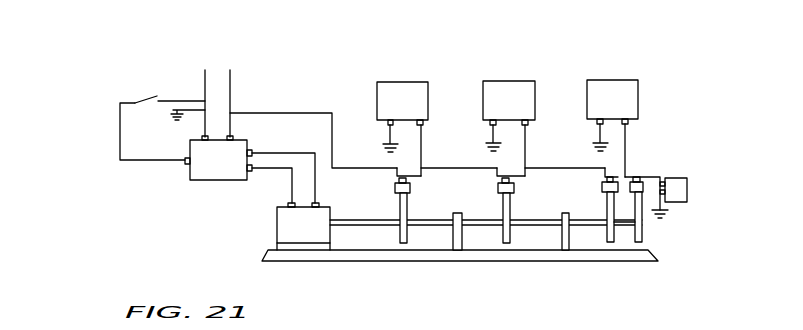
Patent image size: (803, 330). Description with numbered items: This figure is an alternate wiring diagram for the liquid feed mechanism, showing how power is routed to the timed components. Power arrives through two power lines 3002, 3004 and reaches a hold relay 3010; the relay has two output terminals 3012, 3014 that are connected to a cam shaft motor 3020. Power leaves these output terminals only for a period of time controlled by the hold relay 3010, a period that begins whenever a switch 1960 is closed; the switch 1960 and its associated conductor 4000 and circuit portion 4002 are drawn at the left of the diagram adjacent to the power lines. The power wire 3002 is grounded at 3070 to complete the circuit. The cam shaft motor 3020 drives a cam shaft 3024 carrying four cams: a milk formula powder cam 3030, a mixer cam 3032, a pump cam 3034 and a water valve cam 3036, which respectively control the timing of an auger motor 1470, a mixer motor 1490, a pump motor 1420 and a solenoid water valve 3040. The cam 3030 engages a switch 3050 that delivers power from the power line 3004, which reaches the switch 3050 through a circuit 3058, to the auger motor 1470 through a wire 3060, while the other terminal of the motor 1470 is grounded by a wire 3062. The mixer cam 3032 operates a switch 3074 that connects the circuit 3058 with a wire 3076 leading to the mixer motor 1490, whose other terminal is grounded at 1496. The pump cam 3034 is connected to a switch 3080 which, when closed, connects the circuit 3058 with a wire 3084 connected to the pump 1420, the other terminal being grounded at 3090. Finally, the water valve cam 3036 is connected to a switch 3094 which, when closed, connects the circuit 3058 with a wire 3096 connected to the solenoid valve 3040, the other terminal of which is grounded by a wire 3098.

The conductor 4000 is at (177, 102).
The switch 1960 is at (157, 96).
The circuit 4002 is at (120, 124).
The power line 3002 is at (203, 76).
The power line 3004 is at (232, 80).
The ground 3070 is at (195, 115).
The circuit 3058 is at (318, 112).
The hold relay 3010 is at (196, 181).
The output terminal 3012 is at (252, 152).
The output terminal 3014 is at (250, 181).
The cam shaft motor 3020 is at (280, 229).
The milk formula powder cam 3030 is at (400, 229).
The cam shaft 3024 is at (434, 220).
The switch 3050 is at (395, 186).
The switch 3074 is at (498, 185).
The mixer cam 3032 is at (512, 236).
The pump cam 3034 is at (616, 240).
The water valve cam 3036 is at (645, 240).
The switch 3080 is at (615, 181).
The wire 3096 is at (661, 178).
The switch 3094 is at (645, 222).
The solenoid water valve 3040 is at (690, 188).
The wire 3098 is at (664, 208).
The auger motor 1470 is at (410, 88).
The mixer motor 1490 is at (521, 88).
The pump motor 1420 is at (623, 86).
The wire 3062 is at (388, 135).
The ground 1496 is at (492, 141).
The ground 3090 is at (596, 141).
The wire 3060 is at (423, 133).
The wire 3076 is at (528, 135).
The wire 3084 is at (628, 131).